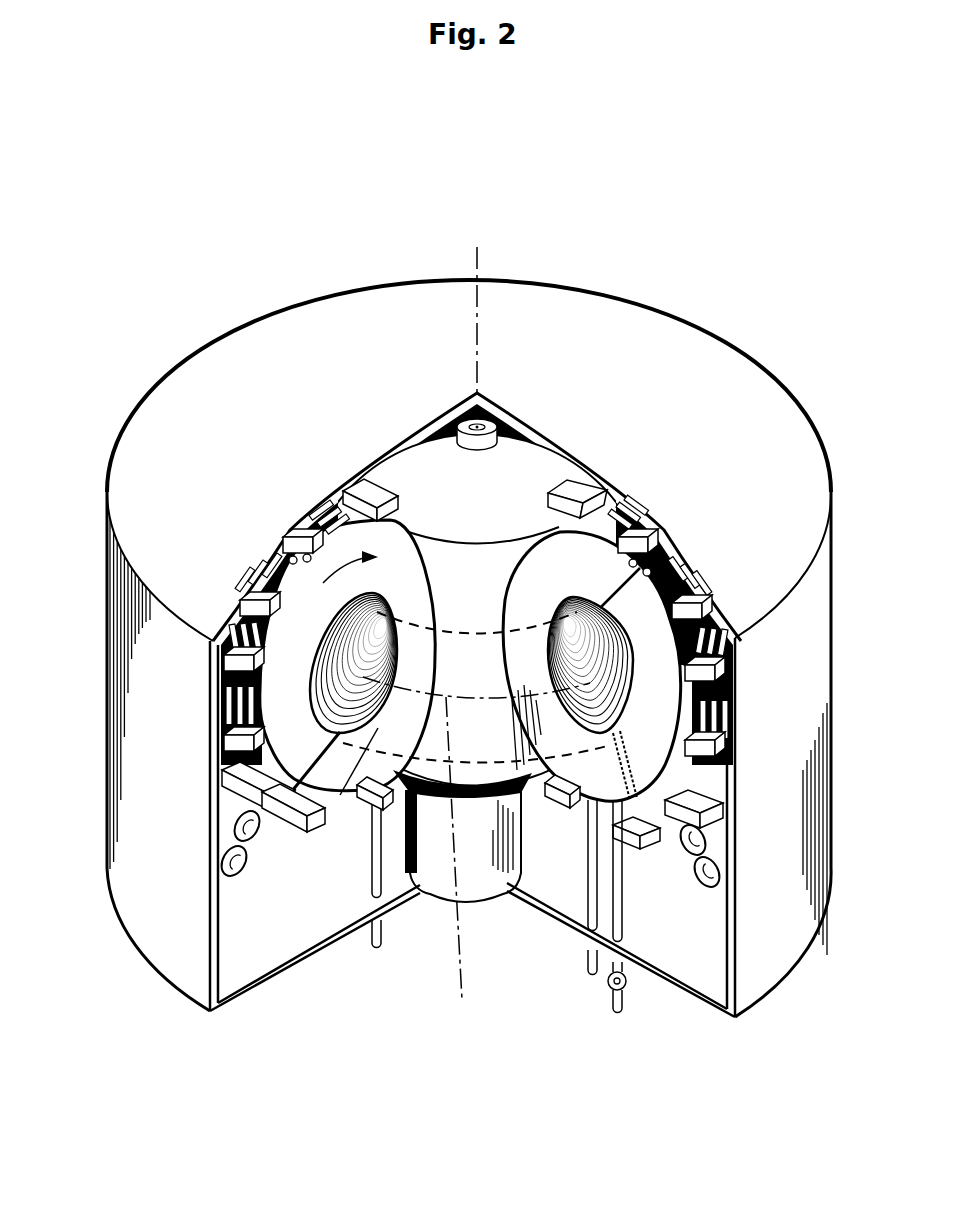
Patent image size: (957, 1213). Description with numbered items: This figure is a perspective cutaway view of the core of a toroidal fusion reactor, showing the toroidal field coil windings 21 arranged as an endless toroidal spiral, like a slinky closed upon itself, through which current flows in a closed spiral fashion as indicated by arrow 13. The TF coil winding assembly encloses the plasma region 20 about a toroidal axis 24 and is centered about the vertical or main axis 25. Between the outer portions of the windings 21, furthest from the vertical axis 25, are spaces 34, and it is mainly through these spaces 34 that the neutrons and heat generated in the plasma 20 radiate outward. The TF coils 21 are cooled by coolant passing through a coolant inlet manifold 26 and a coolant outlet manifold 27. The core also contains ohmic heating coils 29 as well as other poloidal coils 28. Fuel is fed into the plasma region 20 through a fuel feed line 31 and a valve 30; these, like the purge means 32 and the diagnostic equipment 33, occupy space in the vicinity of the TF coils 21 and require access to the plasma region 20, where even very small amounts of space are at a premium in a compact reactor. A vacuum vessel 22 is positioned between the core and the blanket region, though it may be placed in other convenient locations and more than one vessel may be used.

The arrow 13 is at (350, 565).
The ohmic heating coils 29 is at (428, 477).
The vertical axis 25 is at (481, 262).
The poloidal coils 28 is at (648, 540).
The spaces 34 is at (727, 625).
The TF coil winding 21 is at (720, 737).
The coolant inlet manifold 26 is at (232, 822).
The coolant outlet manifold 27 is at (220, 857).
The vacuum vessel 22 is at (223, 950).
The plasma region 20 is at (352, 752).
The toroidal axis 24 is at (456, 905).
The diagnostic equipment 33 is at (378, 940).
The purge means 32 is at (584, 960).
The fuel feed line 31 is at (612, 1002).
The valve 30 is at (627, 985).